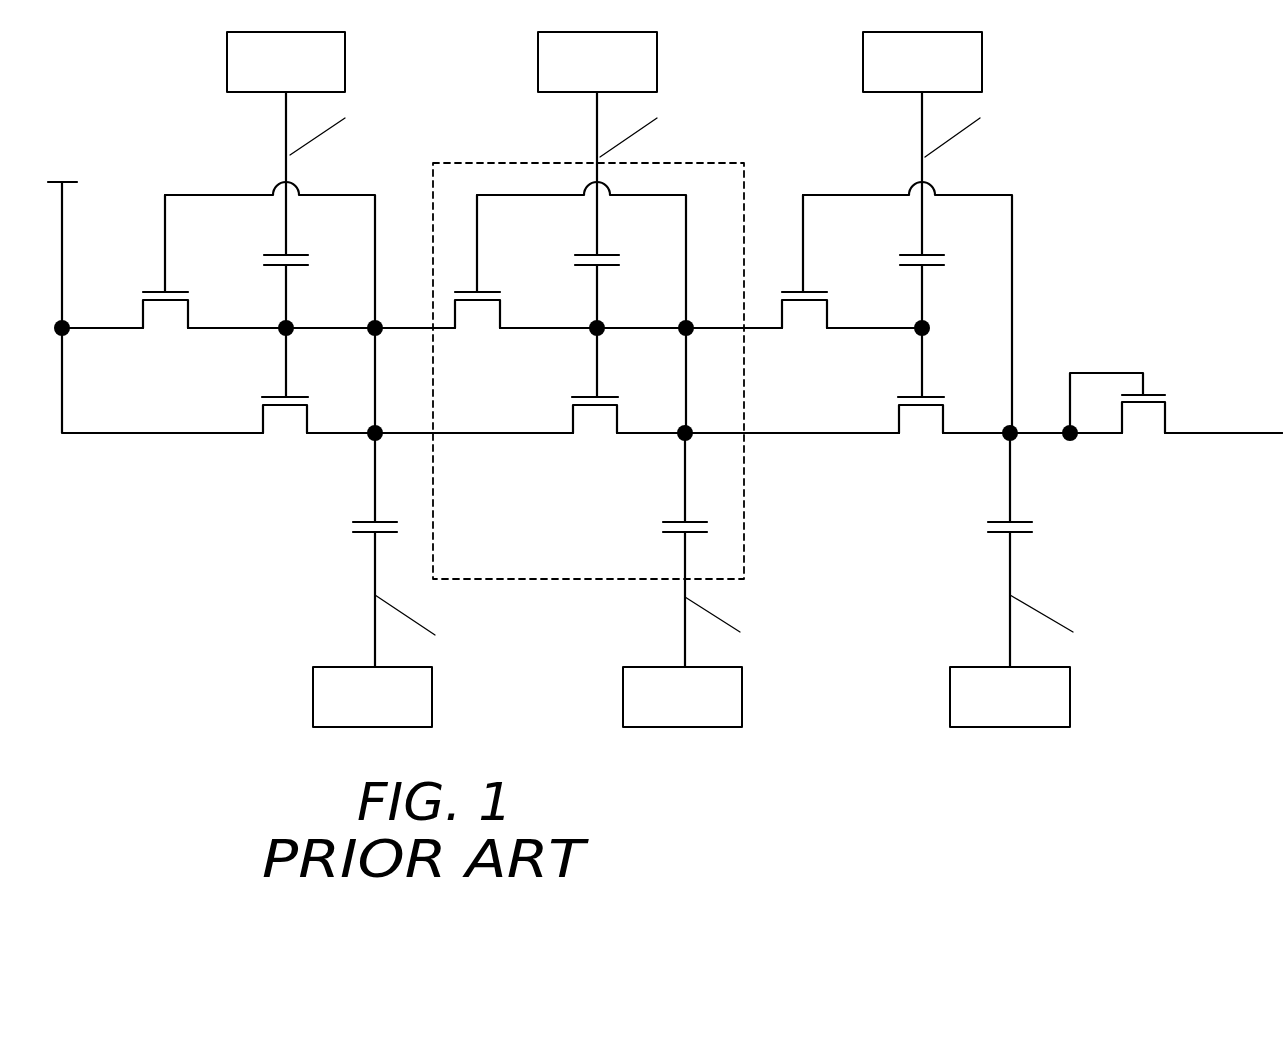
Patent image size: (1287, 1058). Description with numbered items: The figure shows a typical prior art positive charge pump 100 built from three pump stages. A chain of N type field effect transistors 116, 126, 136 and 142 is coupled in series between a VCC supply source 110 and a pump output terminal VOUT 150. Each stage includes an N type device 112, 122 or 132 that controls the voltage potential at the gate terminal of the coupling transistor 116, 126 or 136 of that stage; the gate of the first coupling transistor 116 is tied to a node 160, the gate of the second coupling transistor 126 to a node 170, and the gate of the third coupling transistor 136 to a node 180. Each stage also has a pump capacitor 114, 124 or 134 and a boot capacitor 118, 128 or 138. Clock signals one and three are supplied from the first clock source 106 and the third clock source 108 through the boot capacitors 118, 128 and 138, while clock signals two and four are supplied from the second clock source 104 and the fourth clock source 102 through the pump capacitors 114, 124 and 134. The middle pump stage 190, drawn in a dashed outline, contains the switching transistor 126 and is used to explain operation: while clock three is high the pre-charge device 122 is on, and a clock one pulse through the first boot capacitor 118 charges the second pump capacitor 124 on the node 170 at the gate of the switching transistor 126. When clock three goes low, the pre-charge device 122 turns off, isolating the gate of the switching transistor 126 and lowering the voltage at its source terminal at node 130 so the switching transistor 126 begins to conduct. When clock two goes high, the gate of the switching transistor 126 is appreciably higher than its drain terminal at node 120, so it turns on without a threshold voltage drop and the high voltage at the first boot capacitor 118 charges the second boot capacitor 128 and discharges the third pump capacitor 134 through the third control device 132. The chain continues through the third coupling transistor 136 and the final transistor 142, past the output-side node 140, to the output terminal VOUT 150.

The positive charge pump 100 is at (232, 542).
The source 4 102 is at (648, 143).
The source 2 104 is at (641, 143).
The source 1 106 is at (736, 629).
The source 3 108 is at (726, 629).
The VCC supply source 110 is at (93, 158).
The N type device N1 112 is at (215, 281).
The pump capacitor C1 114 is at (335, 247).
The N type field effect transistor N2 116 is at (335, 382).
The boot capacitor C2 118 is at (421, 561).
The node 120 is at (440, 435).
The N type device N3 122 is at (526, 281).
The pump capacitor C3 124 is at (646, 247).
The N type field effect transistor N4 126 is at (646, 384).
The boot capacitor C4 128 is at (733, 564).
The node 130 is at (760, 435).
The N type device N5 132 is at (851, 281).
The pump capacitor C5 134 is at (971, 247).
The N type field effect transistor N6 136 is at (970, 382).
The boot capacitor C6 138 is at (1058, 561).
The output stage node 140 is at (1028, 435).
The N type field effect transistor N7 142 is at (1193, 389).
The pump output terminal VOUT 150 is at (1250, 435).
The first stage intermediate node 160 is at (215, 329).
The node 170 is at (533, 330).
The third stage intermediate node 180 is at (858, 330).
The single stage 190 is at (535, 163).